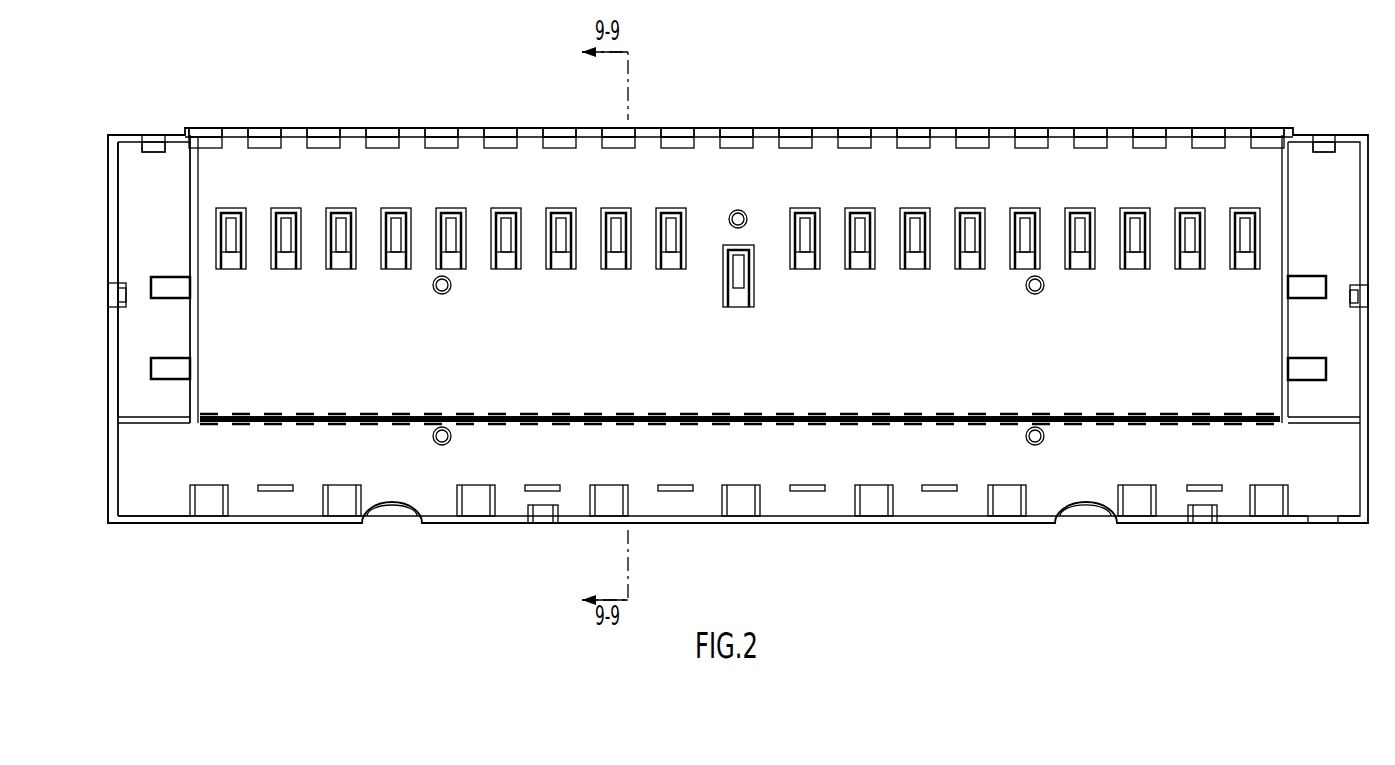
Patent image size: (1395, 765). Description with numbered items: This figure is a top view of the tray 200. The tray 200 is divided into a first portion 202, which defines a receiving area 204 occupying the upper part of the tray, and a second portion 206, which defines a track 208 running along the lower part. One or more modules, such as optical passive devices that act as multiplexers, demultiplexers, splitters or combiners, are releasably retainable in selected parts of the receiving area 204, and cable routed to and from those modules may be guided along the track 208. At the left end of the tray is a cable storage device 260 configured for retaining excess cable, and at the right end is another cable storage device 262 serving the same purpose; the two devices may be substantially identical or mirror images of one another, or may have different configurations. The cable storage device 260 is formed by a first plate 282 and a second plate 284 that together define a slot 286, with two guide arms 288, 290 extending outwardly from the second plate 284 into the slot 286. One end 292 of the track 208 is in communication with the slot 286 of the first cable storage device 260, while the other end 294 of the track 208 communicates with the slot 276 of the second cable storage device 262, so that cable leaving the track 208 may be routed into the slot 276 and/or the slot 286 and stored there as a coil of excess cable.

The tray 200 is at (944, 86).
The first portion 202 is at (322, 185).
The receiving area 204 is at (1042, 180).
The second portion 206 is at (795, 460).
The track 208 is at (452, 472).
The cable storage device 260 is at (156, 115).
The cable storage device 262 is at (1317, 116).
The slot 276 is at (1355, 285).
The first plate 282 is at (112, 357).
The second plate 284 is at (193, 337).
The slot 286 is at (164, 238).
The guide arm 288 is at (178, 286).
The guide arm 290 is at (177, 370).
The end of the track 292 is at (155, 482).
The other end of the track 294 is at (1315, 473).